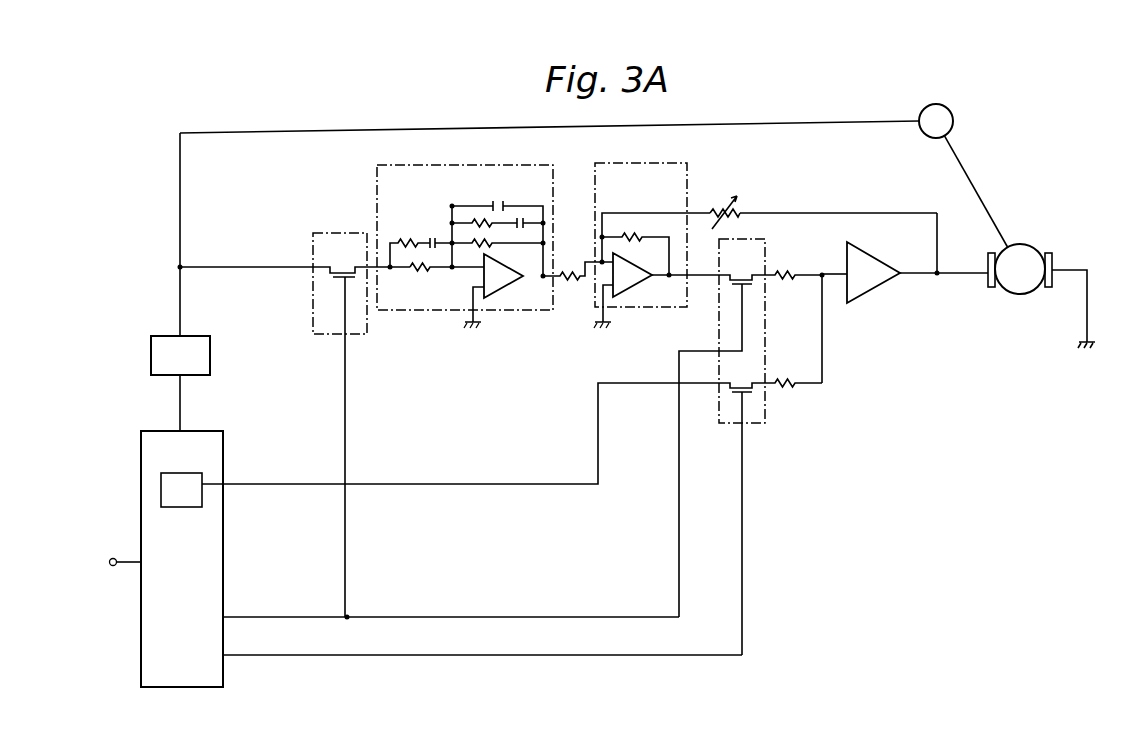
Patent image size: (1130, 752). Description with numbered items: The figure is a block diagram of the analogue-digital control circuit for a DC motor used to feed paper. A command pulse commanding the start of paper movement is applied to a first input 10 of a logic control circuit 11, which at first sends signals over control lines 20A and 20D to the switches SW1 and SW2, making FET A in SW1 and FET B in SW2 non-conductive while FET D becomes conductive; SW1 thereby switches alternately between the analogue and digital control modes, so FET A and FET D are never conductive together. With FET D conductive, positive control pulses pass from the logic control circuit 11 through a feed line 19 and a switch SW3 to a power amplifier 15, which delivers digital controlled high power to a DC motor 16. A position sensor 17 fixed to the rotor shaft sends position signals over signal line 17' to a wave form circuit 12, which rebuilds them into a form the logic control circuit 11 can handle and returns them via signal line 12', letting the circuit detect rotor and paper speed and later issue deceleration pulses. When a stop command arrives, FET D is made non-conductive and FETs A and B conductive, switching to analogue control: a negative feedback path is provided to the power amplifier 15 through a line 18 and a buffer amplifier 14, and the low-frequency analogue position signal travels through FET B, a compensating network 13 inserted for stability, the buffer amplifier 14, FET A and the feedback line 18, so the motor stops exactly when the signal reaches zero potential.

The first input 10 is at (116, 559).
The logic control circuit 11 is at (224, 446).
The wave form circuit 12 is at (200, 355).
The signal line 12' is at (201, 403).
The compensating network 13 is at (377, 183).
The buffer amplifier 14 is at (689, 178).
The power amplifier 15 is at (877, 290).
The DC motor 16 is at (1012, 293).
The position sensor 17 is at (963, 175).
The signal line 17' is at (549, 116).
The feedback line 18 is at (800, 213).
The feed line 19 is at (515, 483).
The control line 20A is at (347, 458).
The control line 20D is at (636, 655).
The switch SW1 is at (760, 424).
The switch SW2 is at (320, 335).
The switch SW3 is at (203, 477).